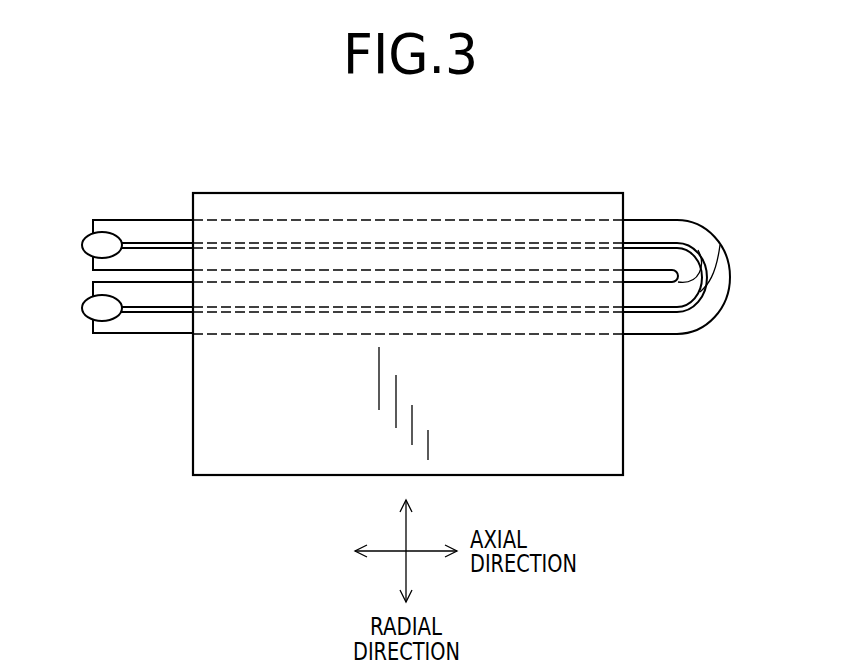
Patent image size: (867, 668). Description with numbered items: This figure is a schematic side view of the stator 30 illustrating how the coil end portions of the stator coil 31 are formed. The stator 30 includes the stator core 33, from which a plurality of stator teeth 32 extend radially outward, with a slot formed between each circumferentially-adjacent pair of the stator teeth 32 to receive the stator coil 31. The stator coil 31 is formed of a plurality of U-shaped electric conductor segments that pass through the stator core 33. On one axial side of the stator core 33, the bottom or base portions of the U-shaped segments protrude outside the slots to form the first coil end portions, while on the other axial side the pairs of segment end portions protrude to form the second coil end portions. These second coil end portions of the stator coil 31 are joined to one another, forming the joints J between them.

The stator 30 is at (470, 160).
The stator coil 31 is at (195, 186).
The stator teeth 32 is at (408, 225).
The stator core 33 is at (408, 230).
The joints J is at (103, 245).